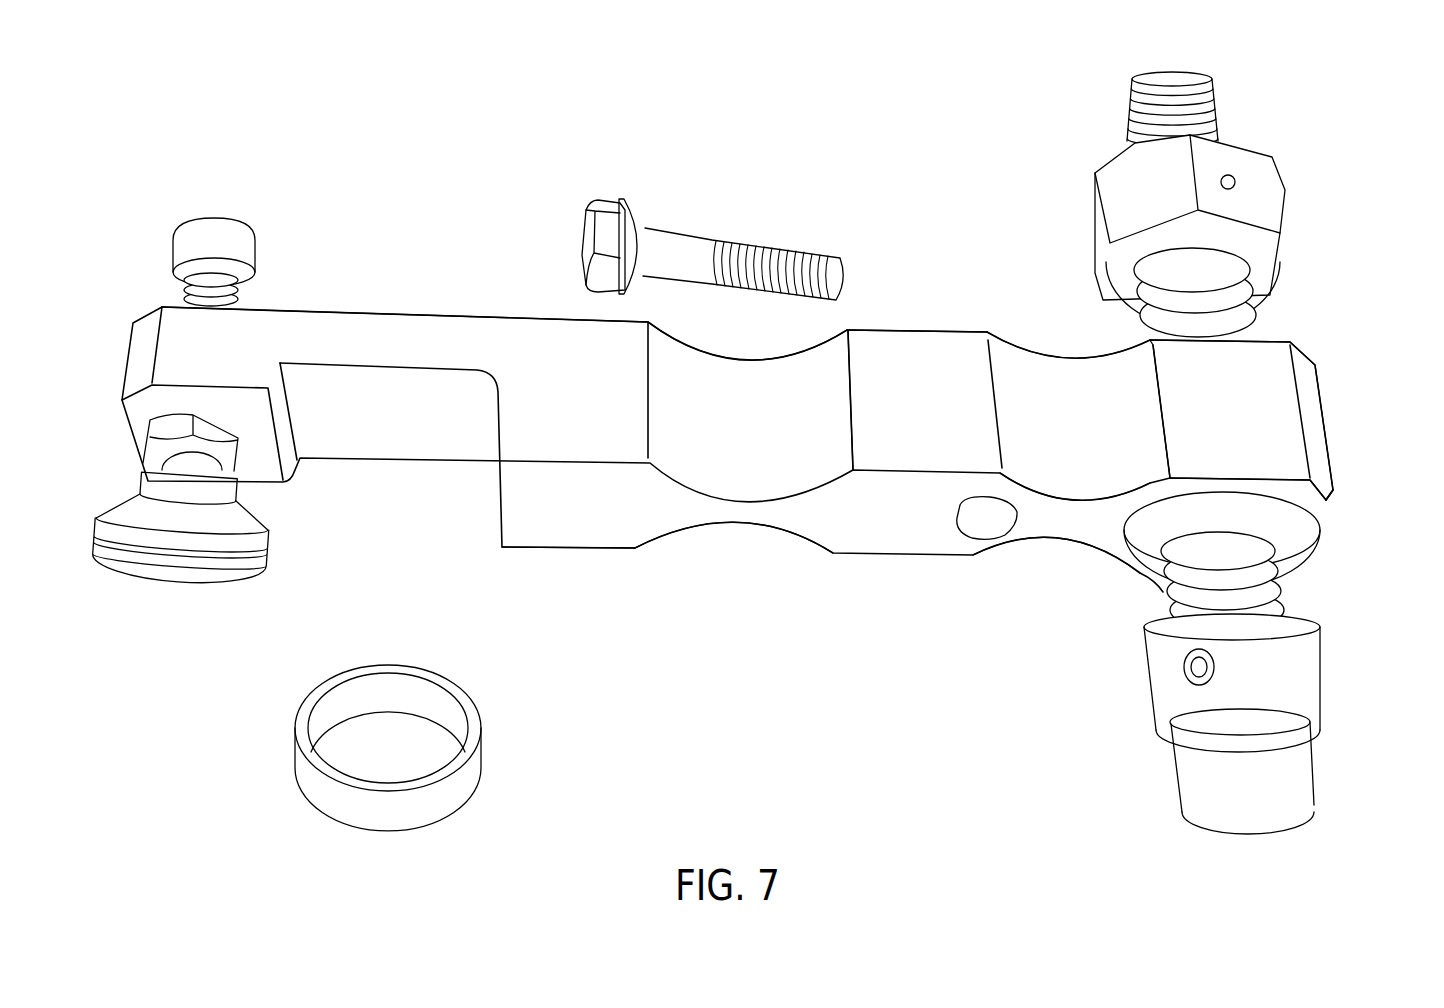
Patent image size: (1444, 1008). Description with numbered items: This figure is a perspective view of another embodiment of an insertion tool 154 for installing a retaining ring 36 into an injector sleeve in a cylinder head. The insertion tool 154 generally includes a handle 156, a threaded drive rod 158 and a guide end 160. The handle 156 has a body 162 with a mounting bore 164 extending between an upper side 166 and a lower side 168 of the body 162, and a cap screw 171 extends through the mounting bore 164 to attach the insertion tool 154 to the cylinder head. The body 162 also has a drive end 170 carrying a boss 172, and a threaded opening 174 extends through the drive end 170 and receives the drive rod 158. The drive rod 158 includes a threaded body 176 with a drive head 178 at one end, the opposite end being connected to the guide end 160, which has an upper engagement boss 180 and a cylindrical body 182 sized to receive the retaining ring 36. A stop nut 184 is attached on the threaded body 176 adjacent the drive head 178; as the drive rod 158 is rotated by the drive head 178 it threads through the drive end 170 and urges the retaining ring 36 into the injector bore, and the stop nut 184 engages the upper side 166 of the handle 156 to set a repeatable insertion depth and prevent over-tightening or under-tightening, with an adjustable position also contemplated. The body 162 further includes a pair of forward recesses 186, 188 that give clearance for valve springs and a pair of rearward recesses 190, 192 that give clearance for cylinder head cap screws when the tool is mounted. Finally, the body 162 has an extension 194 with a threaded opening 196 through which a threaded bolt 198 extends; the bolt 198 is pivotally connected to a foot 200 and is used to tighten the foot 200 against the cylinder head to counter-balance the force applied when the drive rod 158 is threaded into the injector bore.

The retaining ring 36 is at (284, 816).
The insertion tool 154 is at (1256, 177).
The handle 156 is at (727, 476).
The threaded drive rod 158 is at (1278, 301).
The guide end 160 is at (1249, 713).
The body 162 is at (598, 565).
The mounting bore 164 is at (988, 522).
The upper side 166 is at (925, 328).
The lower side 168 is at (897, 540).
The drive end 170 is at (1318, 437).
The cap screw 171 is at (675, 230).
The boss 172 is at (1322, 545).
The threaded opening 174 is at (1288, 562).
The threaded body 176 is at (1185, 607).
The drive head 178 is at (1172, 72).
The upper engagement boss 180 is at (1165, 692).
The cylindrical body 182 is at (1295, 775).
The stop nut 184 is at (1278, 190).
The forward recess 186 is at (1075, 380).
The forward recess 188 is at (1072, 543).
The rearward recess 190 is at (735, 378).
The rearward recess 192 is at (740, 528).
The extension 194 is at (400, 302).
The threaded opening 196 is at (170, 427).
The threaded bolt 198 is at (218, 230).
The foot 200 is at (157, 588).